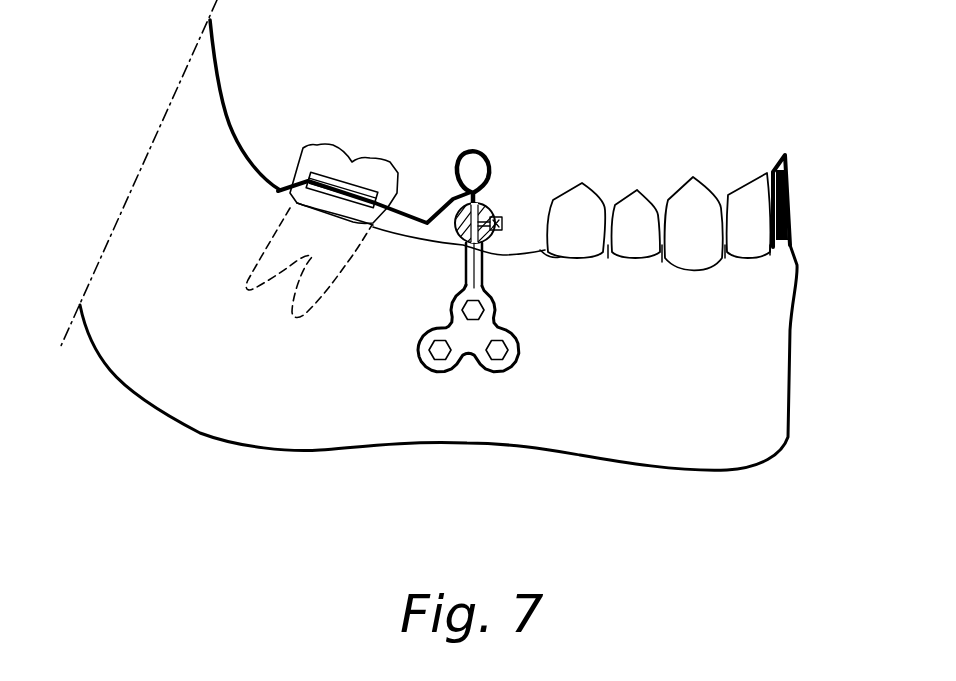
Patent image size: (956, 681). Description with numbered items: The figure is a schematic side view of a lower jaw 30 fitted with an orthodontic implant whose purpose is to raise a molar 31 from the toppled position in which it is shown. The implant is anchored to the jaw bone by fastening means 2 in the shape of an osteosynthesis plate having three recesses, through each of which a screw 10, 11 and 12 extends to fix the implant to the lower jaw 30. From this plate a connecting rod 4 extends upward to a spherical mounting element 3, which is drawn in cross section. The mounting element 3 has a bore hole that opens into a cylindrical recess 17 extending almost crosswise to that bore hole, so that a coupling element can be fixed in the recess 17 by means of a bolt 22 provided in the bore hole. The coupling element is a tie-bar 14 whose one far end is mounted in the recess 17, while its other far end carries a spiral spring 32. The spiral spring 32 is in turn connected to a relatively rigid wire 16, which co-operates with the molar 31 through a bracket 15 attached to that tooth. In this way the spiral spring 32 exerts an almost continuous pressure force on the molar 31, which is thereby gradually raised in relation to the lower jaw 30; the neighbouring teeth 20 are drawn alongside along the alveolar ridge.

The fastening means 2 is at (470, 352).
The spherical mounting element 3 is at (488, 208).
The connecting rod 4 is at (482, 272).
The screw 10 is at (500, 352).
The screw 11 is at (476, 311).
The screw 12 is at (440, 353).
The tie-bar 14 is at (466, 233).
The bracket 15 is at (350, 178).
The rigid wire 16 is at (413, 212).
The cylindrical recess 17 is at (470, 250).
The teeth 20 is at (690, 217).
The bolt 22 is at (502, 218).
The lower jaw 30 is at (265, 380).
The molar 31 is at (330, 160).
The spiral spring 32 is at (474, 150).